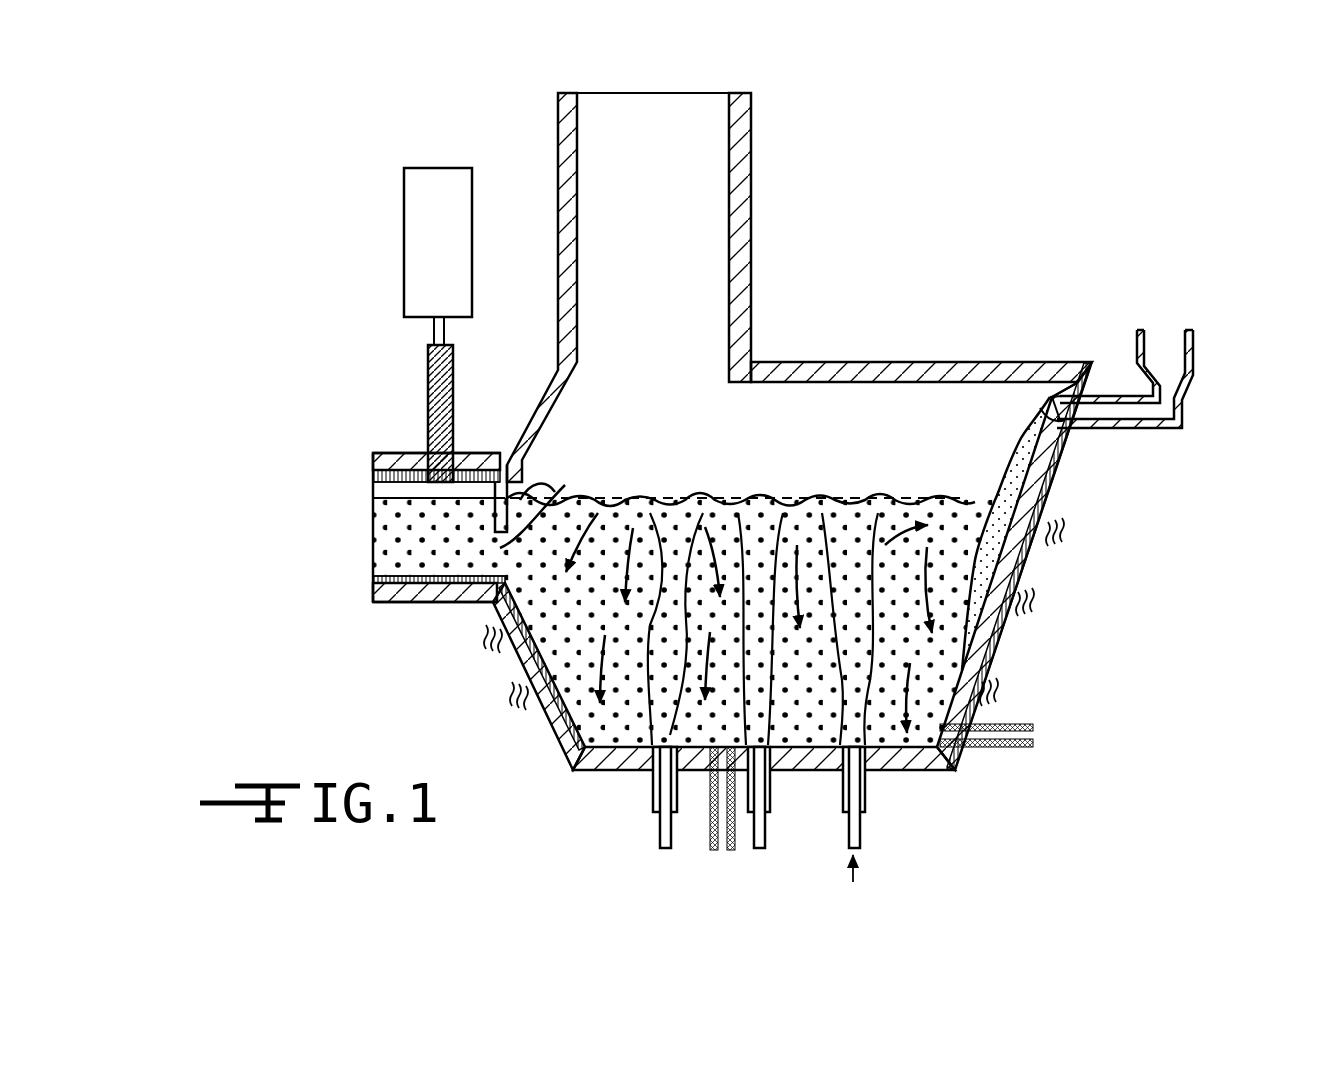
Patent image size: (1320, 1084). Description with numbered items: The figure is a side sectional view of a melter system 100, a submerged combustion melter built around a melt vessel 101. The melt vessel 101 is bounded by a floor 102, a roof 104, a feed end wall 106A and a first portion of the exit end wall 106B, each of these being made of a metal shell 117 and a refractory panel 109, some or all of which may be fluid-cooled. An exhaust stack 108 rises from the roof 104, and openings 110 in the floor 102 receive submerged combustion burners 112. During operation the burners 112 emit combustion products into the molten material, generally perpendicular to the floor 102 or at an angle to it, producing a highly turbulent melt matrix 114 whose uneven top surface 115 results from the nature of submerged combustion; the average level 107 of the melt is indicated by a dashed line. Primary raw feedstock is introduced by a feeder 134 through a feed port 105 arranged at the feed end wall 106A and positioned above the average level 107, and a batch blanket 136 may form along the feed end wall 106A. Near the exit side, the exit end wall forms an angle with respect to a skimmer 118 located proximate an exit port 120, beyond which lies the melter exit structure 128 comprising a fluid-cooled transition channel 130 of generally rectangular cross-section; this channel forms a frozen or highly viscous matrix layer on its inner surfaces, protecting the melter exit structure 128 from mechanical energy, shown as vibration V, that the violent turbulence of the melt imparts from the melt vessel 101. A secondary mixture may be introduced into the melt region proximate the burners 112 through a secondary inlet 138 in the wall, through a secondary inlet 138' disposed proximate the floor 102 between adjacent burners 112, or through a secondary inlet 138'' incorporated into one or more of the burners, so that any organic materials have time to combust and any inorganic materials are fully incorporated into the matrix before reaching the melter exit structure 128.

The melter system 100 is at (1018, 202).
The melt vessel 101 is at (1040, 400).
The floor 102 is at (700, 760).
The roof 104 is at (800, 362).
The feed port 105 is at (1062, 386).
The feed end wall 106A is at (1030, 568).
The first portion of the exit end wall 106B is at (528, 660).
The average level 107 is at (840, 498).
The exhaust stack 108 is at (752, 170).
The refractory panel 109 is at (373, 462).
The openings 110 is at (655, 785).
The submerged combustion burners 112 is at (655, 830).
The highly turbulent melt matrix 114 is at (985, 545).
The uneven top surface 115 is at (800, 487).
The metal shell 117 is at (395, 453).
The skimmer 118 is at (548, 488).
The exit port 120 is at (548, 500).
The melter exit structure 128 is at (312, 432).
The fluid-cooled transition channel 130 is at (405, 605).
The feeder 134 is at (1196, 340).
The batch blanket 136 is at (1040, 455).
The secondary inlet 138 is at (1020, 764).
The secondary inlet 138' is at (698, 832).
The secondary inlet 138'' is at (889, 893).
The vibration V is at (1050, 540).